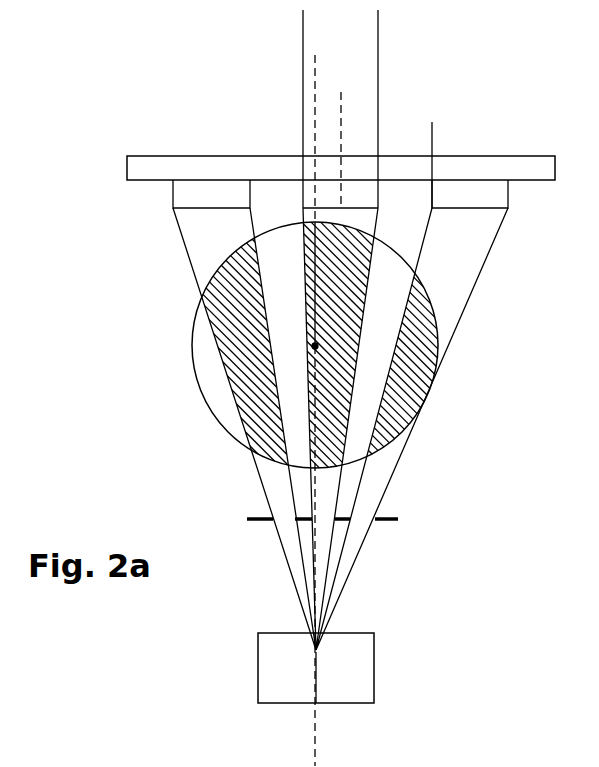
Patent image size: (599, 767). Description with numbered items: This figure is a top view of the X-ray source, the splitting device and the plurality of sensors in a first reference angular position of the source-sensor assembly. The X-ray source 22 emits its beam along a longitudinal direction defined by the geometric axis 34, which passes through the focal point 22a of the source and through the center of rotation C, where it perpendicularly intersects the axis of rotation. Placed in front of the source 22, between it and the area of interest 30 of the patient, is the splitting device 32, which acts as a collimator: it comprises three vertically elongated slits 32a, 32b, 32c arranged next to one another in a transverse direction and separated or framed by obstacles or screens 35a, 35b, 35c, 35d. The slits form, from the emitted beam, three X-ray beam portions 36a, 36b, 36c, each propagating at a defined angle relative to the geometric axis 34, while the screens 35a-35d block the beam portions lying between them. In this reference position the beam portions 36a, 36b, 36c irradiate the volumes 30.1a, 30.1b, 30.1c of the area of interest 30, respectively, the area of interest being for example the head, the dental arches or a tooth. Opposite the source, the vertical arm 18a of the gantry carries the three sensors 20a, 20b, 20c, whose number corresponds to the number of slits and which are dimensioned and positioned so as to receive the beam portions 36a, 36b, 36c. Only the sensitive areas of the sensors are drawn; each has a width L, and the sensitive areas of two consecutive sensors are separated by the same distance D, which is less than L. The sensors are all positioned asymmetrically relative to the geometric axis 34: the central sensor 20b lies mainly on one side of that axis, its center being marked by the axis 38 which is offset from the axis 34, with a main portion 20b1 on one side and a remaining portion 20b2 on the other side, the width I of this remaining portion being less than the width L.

The vertical arm 18a is at (533, 166).
The sensor 20a is at (470, 191).
The central sensor 20b is at (380, 192).
The main portion of the central sensor 20b1 is at (365, 200).
The remaining portion of the central sensor 20b2 is at (310, 183).
The sensor 20c is at (213, 186).
The axis of the sensor center 38 is at (341, 142).
The width of the sensitive area L is at (378, 15).
The width of the remaining portion I is at (343, 58).
The distance between sensors D is at (432, 128).
The area of interest 30 is at (209, 408).
The irradiated volume 30.1a is at (422, 372).
The irradiated volume 30.1b is at (345, 404).
The irradiated volume 30.1c is at (229, 342).
The center of rotation C is at (433, 313).
The X-ray beam portion 36a is at (392, 458).
The X-ray beam portion 36b is at (335, 482).
The X-ray beam portion 36c is at (270, 482).
The splitting device 32 is at (326, 558).
The slit 32a is at (398, 523).
The slit 32b is at (323, 522).
The slit 32c is at (283, 518).
The obstacle or screen 35a is at (400, 521).
The obstacle or screen 35b is at (372, 524).
The obstacle or screen 35c is at (300, 521).
The obstacle or screen 35d is at (259, 516).
The X-ray source 22 is at (358, 672).
The focal point 22a is at (316, 654).
The geometric axis 34 is at (315, 733).